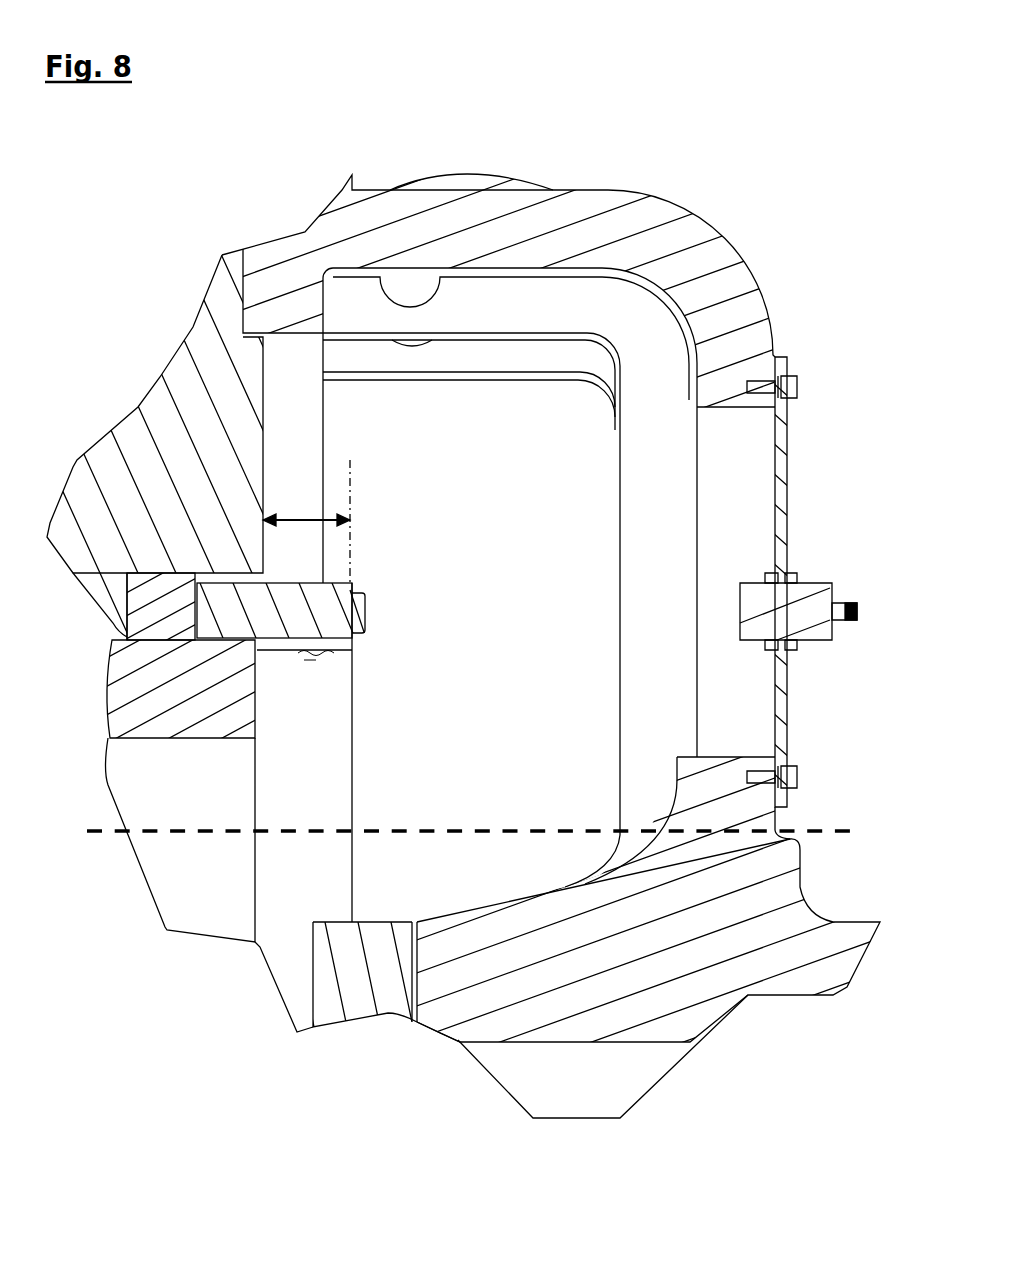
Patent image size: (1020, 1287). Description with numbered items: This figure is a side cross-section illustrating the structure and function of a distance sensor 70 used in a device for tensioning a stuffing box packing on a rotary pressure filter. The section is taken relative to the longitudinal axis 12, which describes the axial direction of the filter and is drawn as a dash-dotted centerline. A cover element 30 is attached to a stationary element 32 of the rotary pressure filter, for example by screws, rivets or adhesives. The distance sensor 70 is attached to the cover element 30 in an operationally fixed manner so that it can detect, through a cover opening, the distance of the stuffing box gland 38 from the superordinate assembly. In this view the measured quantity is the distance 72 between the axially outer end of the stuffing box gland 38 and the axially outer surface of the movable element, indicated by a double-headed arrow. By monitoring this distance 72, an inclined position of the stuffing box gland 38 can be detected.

The cover element 30 is at (683, 228).
The stationary element 32 is at (177, 378).
The stuffing box gland 38 is at (338, 627).
The distance sensor 70 is at (808, 585).
The distance 72 is at (306, 521).
The longitudinal axis 12 is at (218, 830).